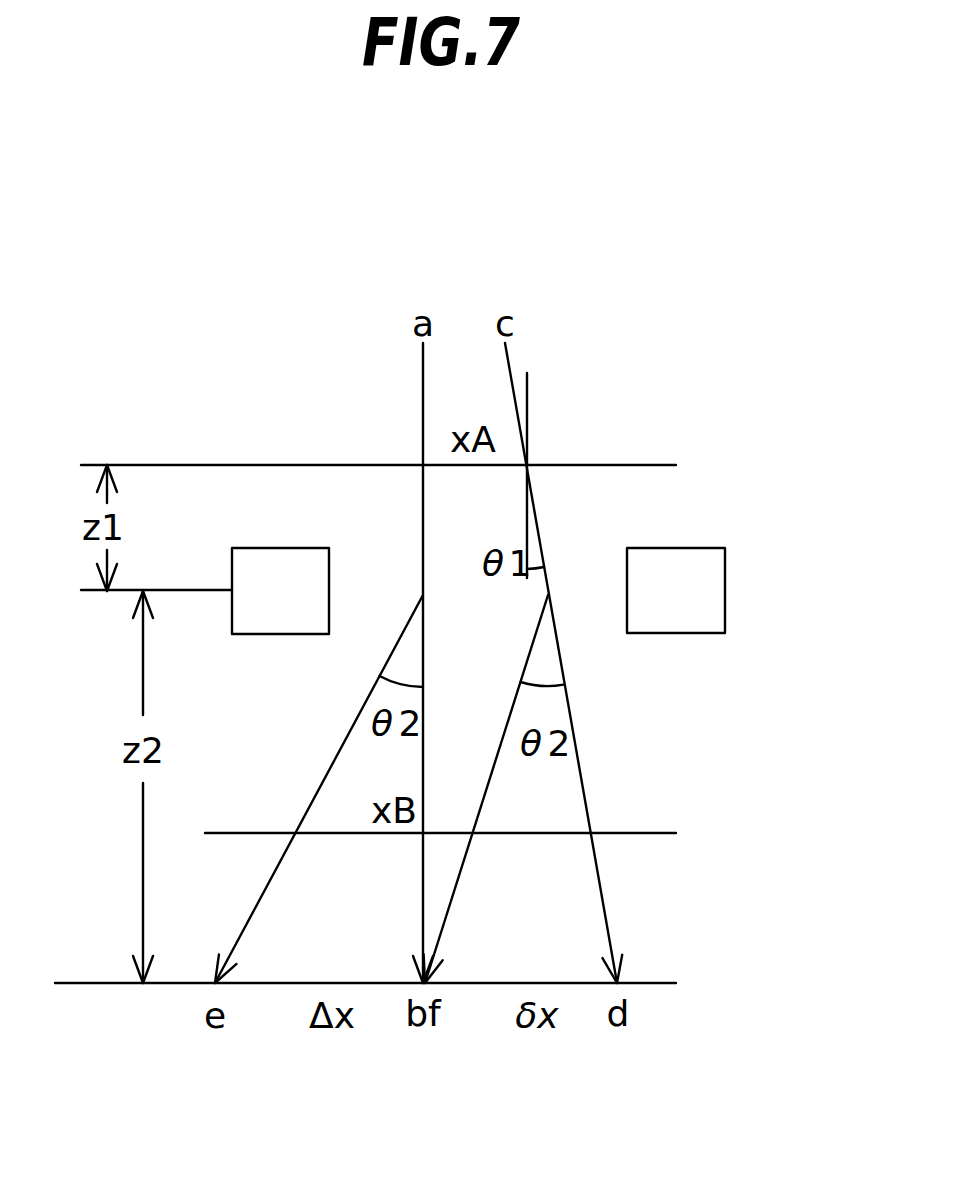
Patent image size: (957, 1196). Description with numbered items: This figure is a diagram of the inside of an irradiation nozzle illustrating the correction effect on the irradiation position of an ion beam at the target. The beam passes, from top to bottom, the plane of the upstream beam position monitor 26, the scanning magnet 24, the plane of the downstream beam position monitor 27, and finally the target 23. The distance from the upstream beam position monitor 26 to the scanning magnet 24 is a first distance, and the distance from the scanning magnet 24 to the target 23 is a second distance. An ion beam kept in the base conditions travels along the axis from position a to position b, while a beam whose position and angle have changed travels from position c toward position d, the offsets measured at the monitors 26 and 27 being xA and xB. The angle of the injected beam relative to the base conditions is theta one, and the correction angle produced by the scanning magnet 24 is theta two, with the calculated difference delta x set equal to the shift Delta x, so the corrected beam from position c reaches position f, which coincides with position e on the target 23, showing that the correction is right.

The target 23 is at (662, 983).
The scanning magnet 24 is at (725, 588).
The upstream beam position monitor 26 is at (661, 465).
The downstream beam position monitor 27 is at (662, 833).